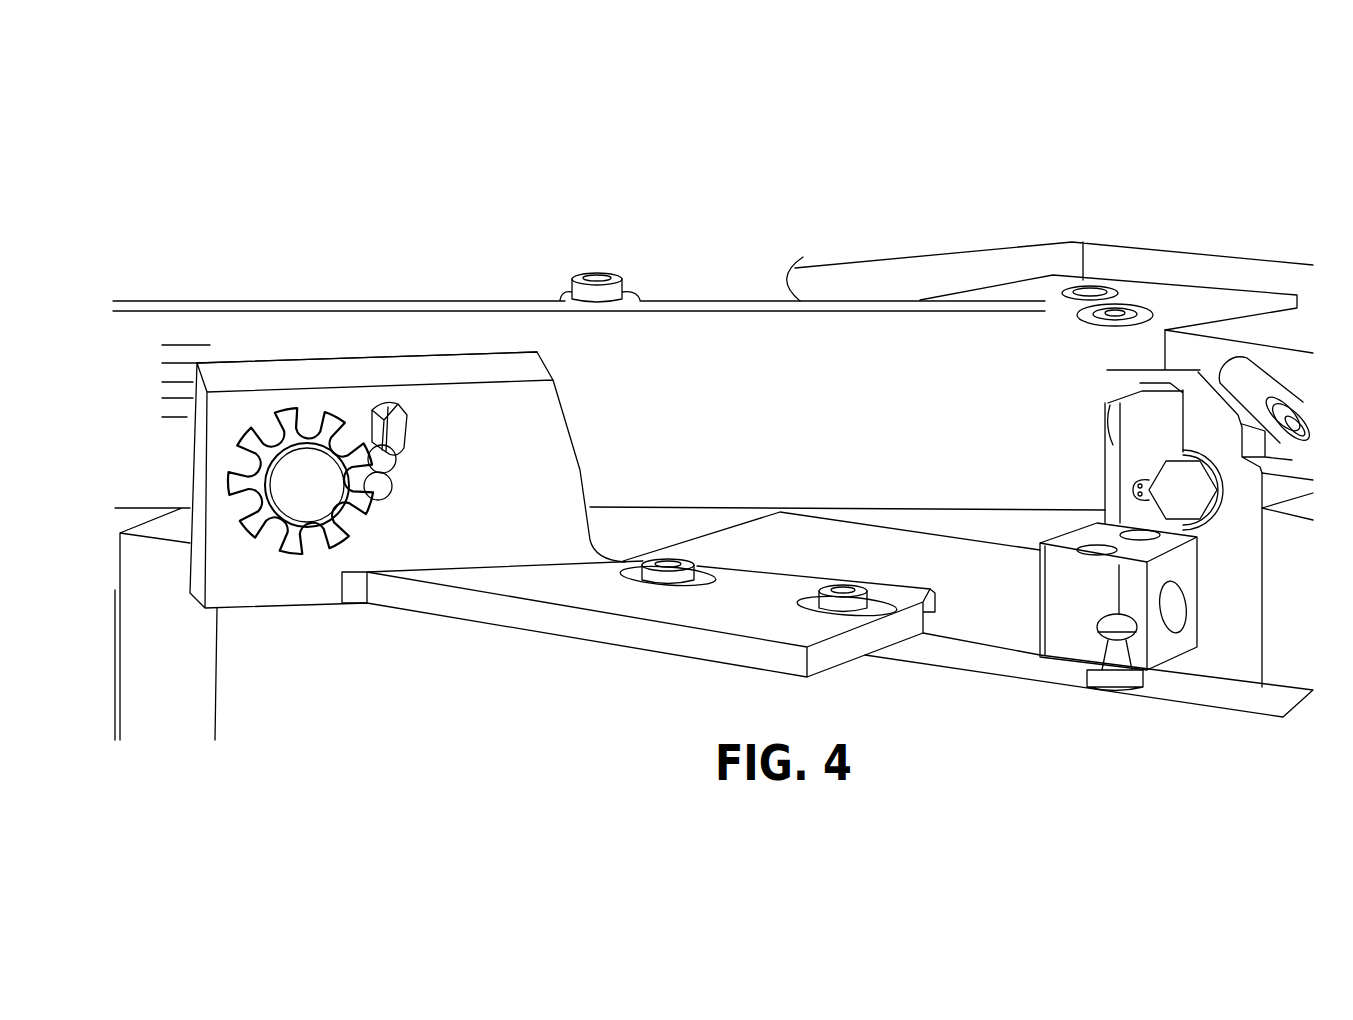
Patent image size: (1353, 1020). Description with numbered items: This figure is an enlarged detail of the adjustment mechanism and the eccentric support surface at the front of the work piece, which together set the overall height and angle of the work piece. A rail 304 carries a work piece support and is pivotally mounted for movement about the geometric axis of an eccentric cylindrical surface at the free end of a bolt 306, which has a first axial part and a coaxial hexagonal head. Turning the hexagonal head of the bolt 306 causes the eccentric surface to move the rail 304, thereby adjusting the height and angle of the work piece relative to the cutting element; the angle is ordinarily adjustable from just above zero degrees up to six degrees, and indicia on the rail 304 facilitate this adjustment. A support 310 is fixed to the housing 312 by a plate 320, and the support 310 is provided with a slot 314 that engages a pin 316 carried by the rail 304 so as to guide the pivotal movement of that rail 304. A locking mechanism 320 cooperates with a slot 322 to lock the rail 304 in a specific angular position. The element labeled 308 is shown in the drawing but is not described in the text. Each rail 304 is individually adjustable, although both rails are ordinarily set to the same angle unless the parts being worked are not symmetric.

The rail 304 is at (467, 300).
The bolt 306 is at (1163, 457).
The adjustment block 308 is at (173, 422).
The support 310 is at (398, 352).
The housing 312 is at (1237, 717).
The slot 314 is at (395, 435).
The pin 316 is at (365, 418).
The locking mechanism 320 is at (287, 552).
The slot 322 is at (277, 405).